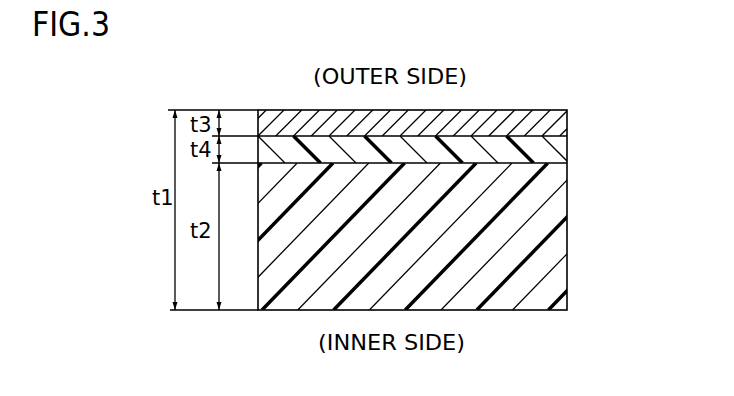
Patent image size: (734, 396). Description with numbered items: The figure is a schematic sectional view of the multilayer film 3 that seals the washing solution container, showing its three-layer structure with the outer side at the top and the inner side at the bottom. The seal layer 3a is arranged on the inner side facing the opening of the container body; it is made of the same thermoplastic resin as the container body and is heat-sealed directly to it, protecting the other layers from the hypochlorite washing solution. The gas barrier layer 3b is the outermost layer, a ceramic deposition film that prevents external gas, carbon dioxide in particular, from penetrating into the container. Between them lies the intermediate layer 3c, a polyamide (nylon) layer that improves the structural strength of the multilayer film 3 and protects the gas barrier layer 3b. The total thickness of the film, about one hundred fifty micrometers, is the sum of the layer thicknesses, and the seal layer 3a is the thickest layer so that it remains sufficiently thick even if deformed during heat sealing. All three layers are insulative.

The multilayer film 3 is at (587, 77).
The seal layer 3a is at (567, 228).
The gas barrier layer 3b is at (567, 122).
The intermediate layer 3c is at (567, 150).